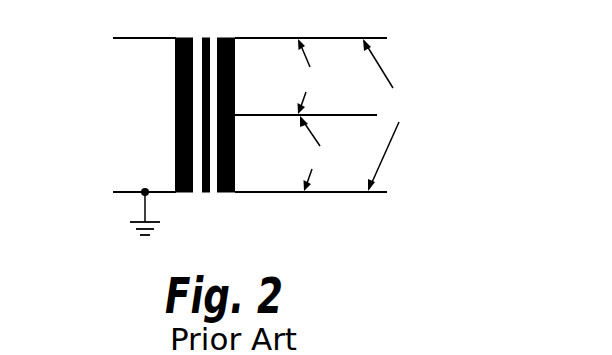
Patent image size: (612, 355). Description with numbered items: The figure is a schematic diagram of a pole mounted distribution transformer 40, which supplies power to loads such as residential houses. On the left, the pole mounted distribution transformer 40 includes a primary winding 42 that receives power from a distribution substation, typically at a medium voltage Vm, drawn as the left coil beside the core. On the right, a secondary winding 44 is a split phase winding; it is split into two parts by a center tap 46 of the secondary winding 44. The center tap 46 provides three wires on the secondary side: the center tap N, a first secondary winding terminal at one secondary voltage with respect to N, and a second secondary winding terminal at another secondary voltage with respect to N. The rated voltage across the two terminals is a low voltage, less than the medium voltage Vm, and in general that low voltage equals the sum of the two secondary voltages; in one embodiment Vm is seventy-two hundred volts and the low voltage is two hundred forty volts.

The pole mounted distribution transformer 40 is at (477, 63).
The primary winding 42 is at (175, 66).
The secondary winding 44 is at (235, 63).
The center tap 46 is at (258, 117).